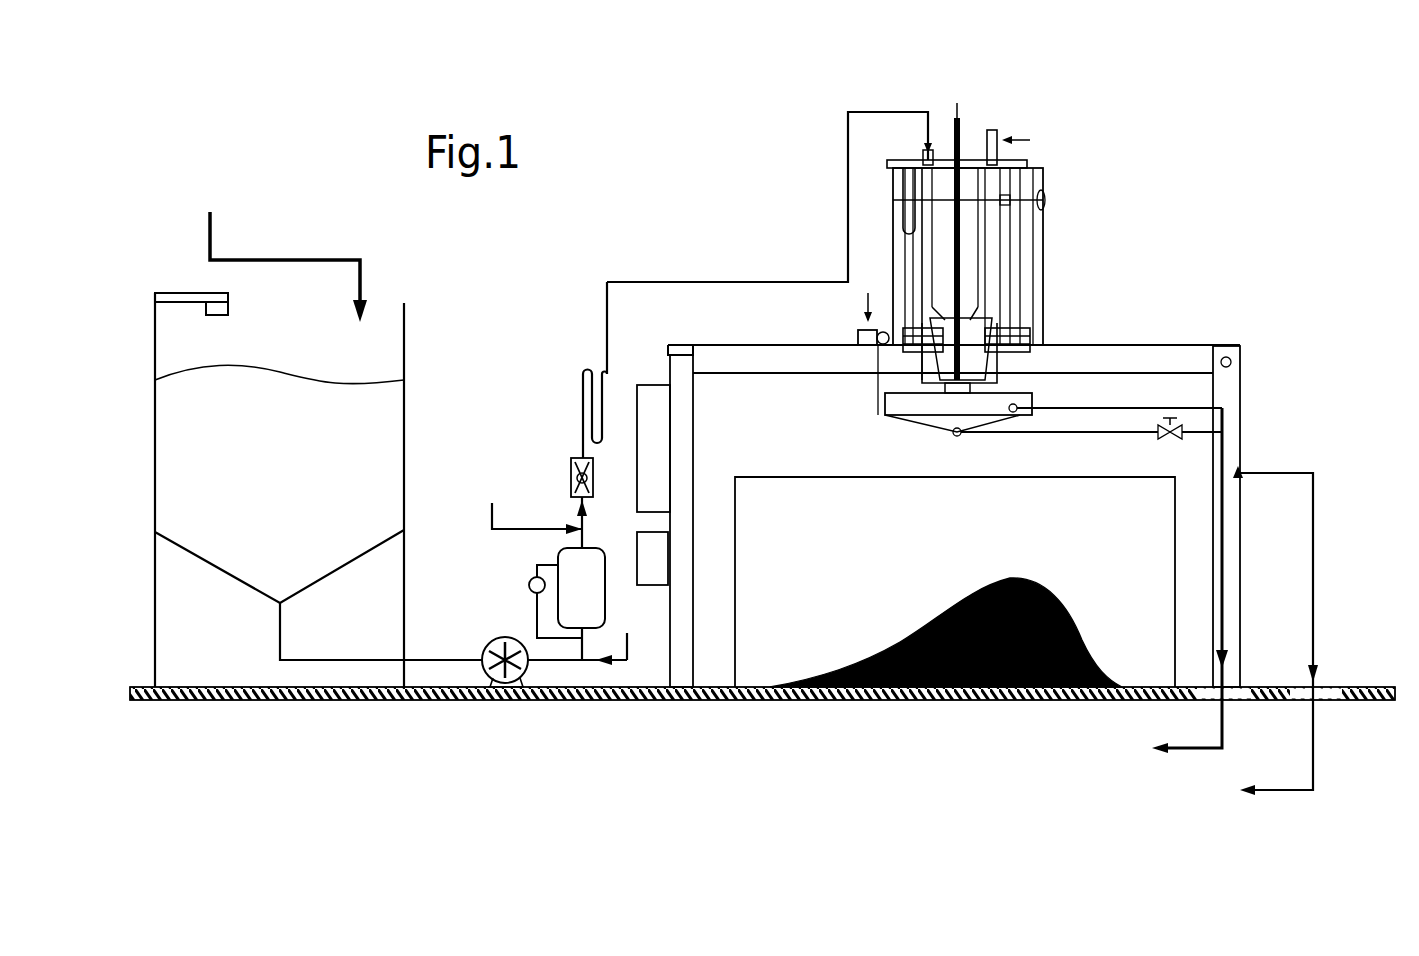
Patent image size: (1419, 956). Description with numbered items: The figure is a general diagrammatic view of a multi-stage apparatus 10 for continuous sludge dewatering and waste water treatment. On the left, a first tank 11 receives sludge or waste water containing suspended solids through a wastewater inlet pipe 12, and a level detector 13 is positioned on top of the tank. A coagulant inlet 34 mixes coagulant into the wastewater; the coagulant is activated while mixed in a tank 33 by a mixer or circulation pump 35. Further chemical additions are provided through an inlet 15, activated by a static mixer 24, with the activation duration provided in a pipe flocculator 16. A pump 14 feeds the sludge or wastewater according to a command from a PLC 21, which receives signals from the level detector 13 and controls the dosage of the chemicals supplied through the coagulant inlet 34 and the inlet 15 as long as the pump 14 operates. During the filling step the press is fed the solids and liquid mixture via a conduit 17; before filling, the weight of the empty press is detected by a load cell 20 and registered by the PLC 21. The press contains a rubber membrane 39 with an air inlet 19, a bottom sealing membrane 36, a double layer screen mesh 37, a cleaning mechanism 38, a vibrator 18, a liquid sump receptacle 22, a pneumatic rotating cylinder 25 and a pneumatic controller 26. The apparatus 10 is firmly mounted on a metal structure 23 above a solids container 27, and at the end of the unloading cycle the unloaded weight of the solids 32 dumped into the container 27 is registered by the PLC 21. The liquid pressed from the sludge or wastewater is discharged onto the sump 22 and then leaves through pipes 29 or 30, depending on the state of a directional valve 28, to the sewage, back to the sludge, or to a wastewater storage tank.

The multi-stage apparatus 10 is at (982, 254).
The first tank 11 is at (405, 312).
The wastewater inlet pipe 12 is at (326, 258).
The level detector 13 is at (188, 292).
The pump 14 is at (497, 642).
The inlet 15 is at (491, 504).
The pipe flocculator 16 is at (582, 390).
The conduit 17 is at (848, 142).
The vibrator 18 is at (997, 135).
The air inlet 19 is at (954, 118).
The load cell 20 is at (683, 345).
The PLC 21 is at (654, 398).
The liquid sump receptacle 22 is at (940, 408).
The metal structure 23 is at (1120, 360).
The static mixer 24 is at (571, 476).
The pneumatic rotating cylinder 25 is at (858, 341).
The pneumatic controller 26 is at (648, 550).
The solids container 27 is at (1020, 498).
The directional valve 28 is at (1174, 440).
The pipe 29 is at (1224, 632).
The pipe 30 is at (1314, 647).
The solids 32 is at (930, 616).
The tank 33 is at (581, 595).
The coagulant inlet 34 is at (628, 657).
The circulation pump 35 is at (531, 580).
The bottom sealing membrane 36 is at (942, 353).
The double layer screen mesh 37 is at (918, 270).
The cleaning mechanism 38 is at (912, 205).
The rubber membrane 39 is at (925, 170).